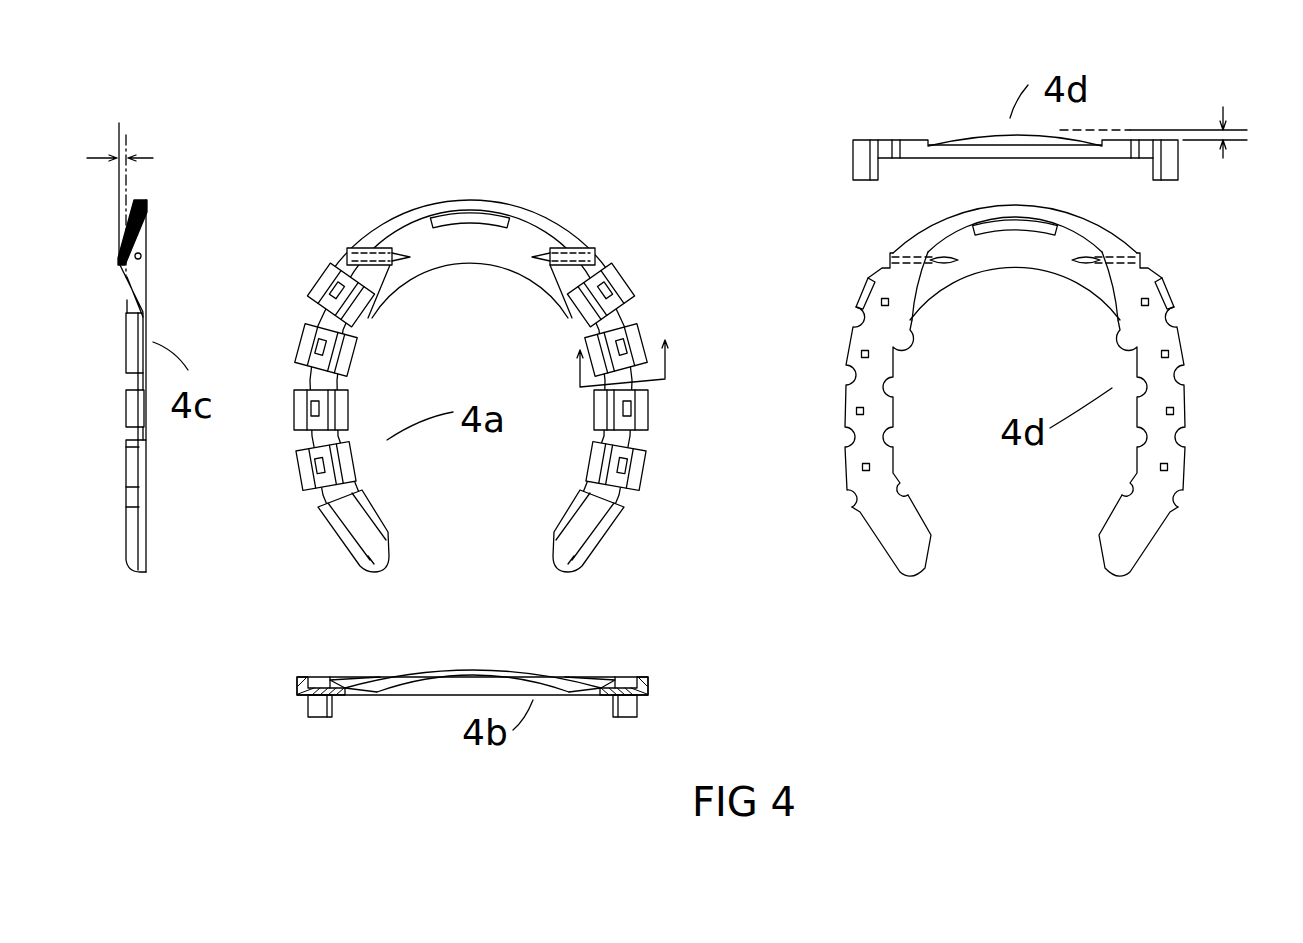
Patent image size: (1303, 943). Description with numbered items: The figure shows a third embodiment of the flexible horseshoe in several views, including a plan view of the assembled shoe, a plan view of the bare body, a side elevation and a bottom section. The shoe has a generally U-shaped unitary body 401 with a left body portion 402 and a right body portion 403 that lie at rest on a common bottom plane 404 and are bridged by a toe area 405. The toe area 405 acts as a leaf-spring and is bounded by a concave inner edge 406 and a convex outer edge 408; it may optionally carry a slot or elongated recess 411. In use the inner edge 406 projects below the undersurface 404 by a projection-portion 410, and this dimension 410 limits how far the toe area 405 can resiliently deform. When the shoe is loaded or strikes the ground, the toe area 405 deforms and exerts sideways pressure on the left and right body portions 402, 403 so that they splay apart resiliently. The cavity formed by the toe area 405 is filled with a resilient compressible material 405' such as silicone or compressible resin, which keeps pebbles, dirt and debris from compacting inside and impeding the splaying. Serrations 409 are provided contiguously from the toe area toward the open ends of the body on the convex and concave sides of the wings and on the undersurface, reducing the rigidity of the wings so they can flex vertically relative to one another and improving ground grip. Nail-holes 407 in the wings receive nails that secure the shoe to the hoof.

The unitary body 401 is at (915, 238).
The left body portion 402 is at (372, 557).
The right body portion 403 is at (572, 560).
The common bottom plane 404 is at (1187, 143).
The toe area 405 is at (457, 232).
The resilient compressible material 405' is at (176, 234).
The concave inner edge 406 is at (483, 267).
The nail-holes 407 is at (1149, 302).
The convex outer edge 408 is at (1087, 243).
The serrations 409 is at (1182, 380).
The projection-portion 410 is at (125, 135).
The slot or elongated recess 411 is at (493, 216).